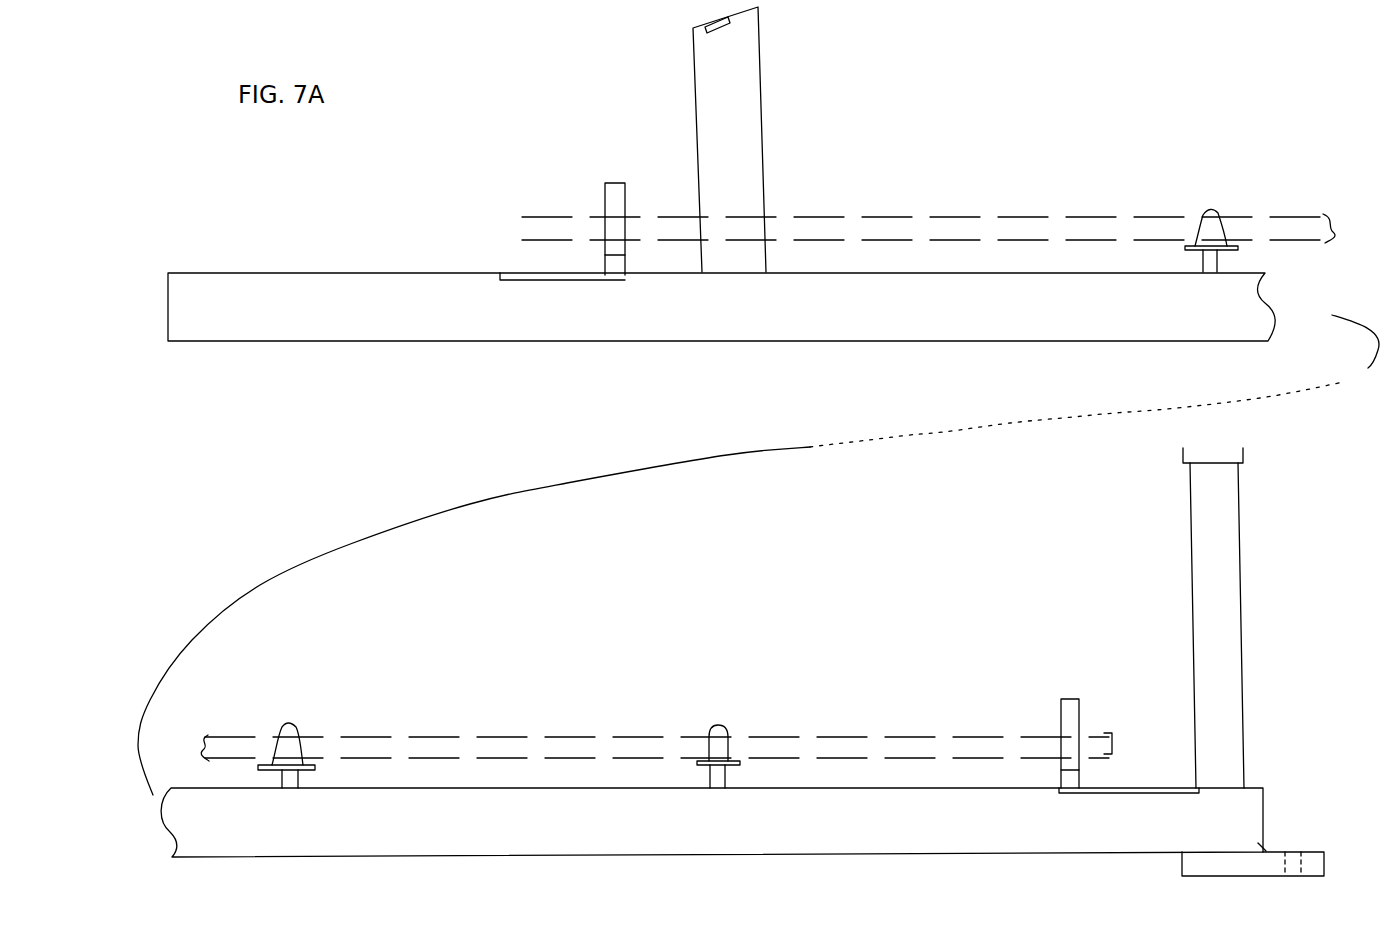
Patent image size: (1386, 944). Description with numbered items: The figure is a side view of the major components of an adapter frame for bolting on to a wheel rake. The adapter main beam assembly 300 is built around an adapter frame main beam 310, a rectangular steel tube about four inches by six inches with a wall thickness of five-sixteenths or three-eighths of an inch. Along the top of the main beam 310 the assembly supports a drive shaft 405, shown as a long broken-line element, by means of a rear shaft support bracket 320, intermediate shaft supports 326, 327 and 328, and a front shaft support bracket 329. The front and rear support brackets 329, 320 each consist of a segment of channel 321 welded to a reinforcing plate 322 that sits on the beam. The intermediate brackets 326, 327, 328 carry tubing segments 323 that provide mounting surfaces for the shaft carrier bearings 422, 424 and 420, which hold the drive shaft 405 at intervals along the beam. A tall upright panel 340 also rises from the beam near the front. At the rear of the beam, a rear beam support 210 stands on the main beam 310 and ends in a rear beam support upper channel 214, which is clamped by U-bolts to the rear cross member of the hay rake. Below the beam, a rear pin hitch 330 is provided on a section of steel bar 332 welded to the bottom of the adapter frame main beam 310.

The adapter frame main beam 310 is at (297, 322).
The drive shaft 405 is at (950, 210).
The front shaft support bracket 329 is at (562, 237).
The reinforcing plate 322 is at (535, 282).
The segment of channel 321 is at (618, 258).
The panel 340 is at (753, 147).
The intermediate shaft support 328 is at (1238, 215).
The shaft carrier bearing 420 is at (1246, 215).
The tubing segment 323 is at (1222, 255).
The adapter main beam assembly 300 is at (720, 537).
The rear beam support 210 is at (1168, 618).
The rear beam support upper channel 214 is at (1163, 460).
The intermediate shaft support 327 is at (322, 734).
The shaft carrier bearing 422 is at (305, 732).
The intermediate shaft support 326 is at (764, 731).
The shaft carrier bearing 424 is at (730, 730).
The rear shaft support bracket 320 is at (1040, 708).
The rear pin hitch 330 is at (1281, 799).
The section of steel bar 332 is at (1274, 846).